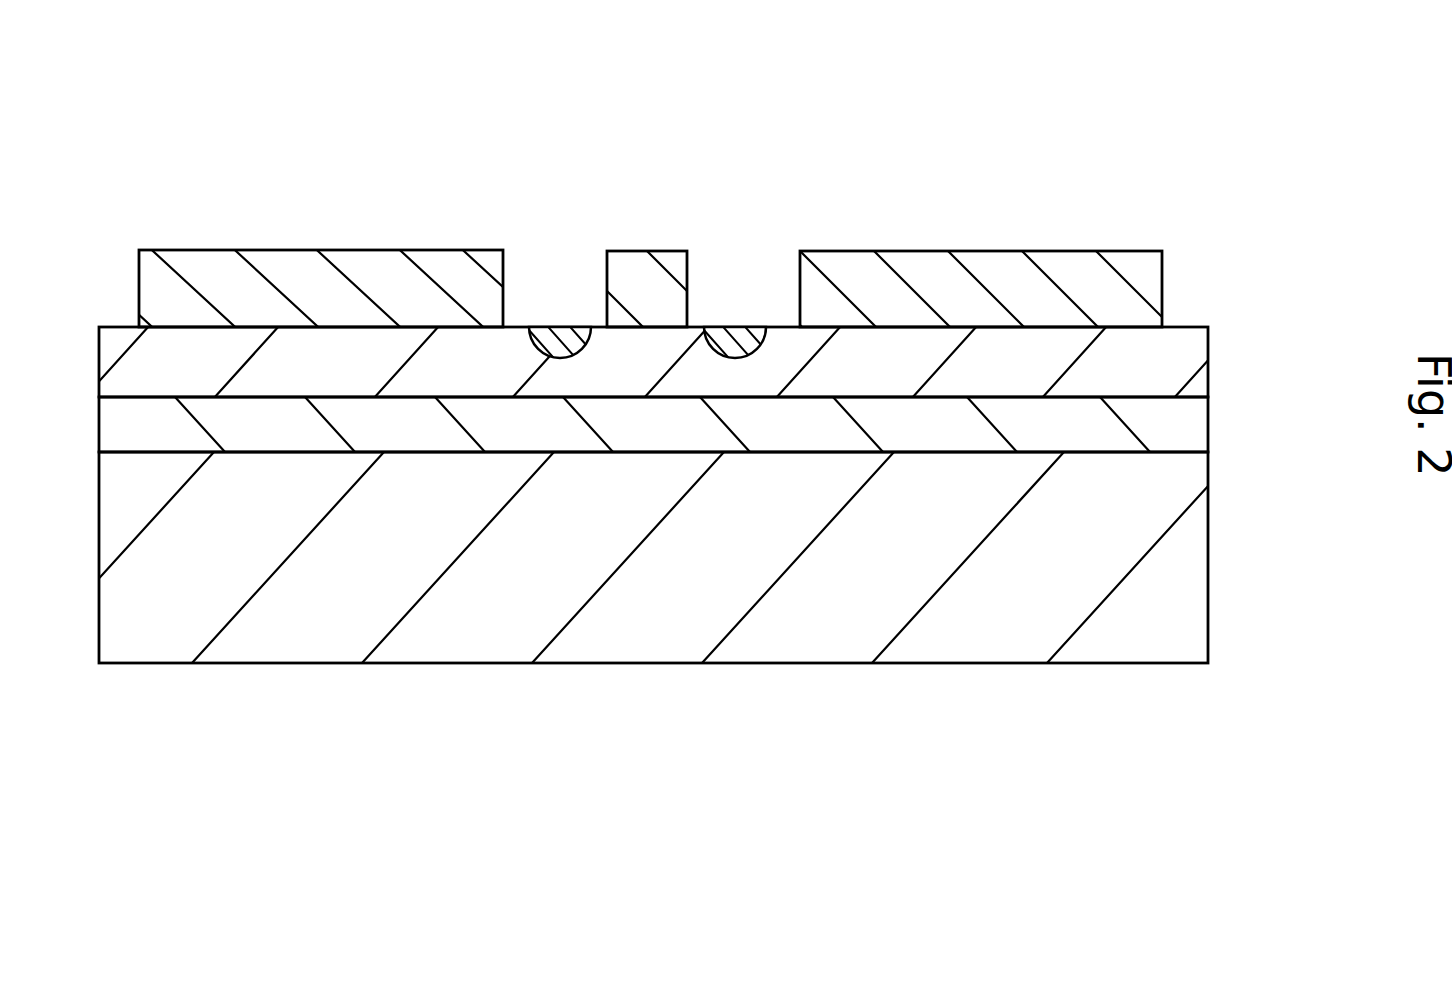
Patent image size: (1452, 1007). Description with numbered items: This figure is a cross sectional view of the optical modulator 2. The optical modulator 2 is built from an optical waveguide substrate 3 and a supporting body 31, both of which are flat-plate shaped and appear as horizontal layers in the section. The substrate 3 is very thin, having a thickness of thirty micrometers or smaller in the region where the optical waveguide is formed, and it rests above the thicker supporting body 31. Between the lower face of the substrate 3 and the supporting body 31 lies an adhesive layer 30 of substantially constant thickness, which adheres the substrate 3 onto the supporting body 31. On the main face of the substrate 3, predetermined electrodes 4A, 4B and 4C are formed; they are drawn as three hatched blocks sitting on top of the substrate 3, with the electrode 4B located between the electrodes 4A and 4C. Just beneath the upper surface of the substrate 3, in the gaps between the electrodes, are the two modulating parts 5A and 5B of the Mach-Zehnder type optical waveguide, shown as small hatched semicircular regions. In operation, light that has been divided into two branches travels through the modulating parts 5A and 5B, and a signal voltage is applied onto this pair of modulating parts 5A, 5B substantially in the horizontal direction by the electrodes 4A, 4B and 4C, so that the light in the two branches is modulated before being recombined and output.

The optical modulator 2 is at (1132, 173).
The optical waveguide substrate 3 is at (1183, 355).
The adhesive layer 30 is at (1177, 423).
The supporting body 31 is at (1160, 522).
The electrode 4A is at (973, 260).
The electrode 4B is at (635, 268).
The electrode 4C is at (380, 260).
The modulating part 5A is at (735, 337).
The modulating part 5B is at (550, 338).